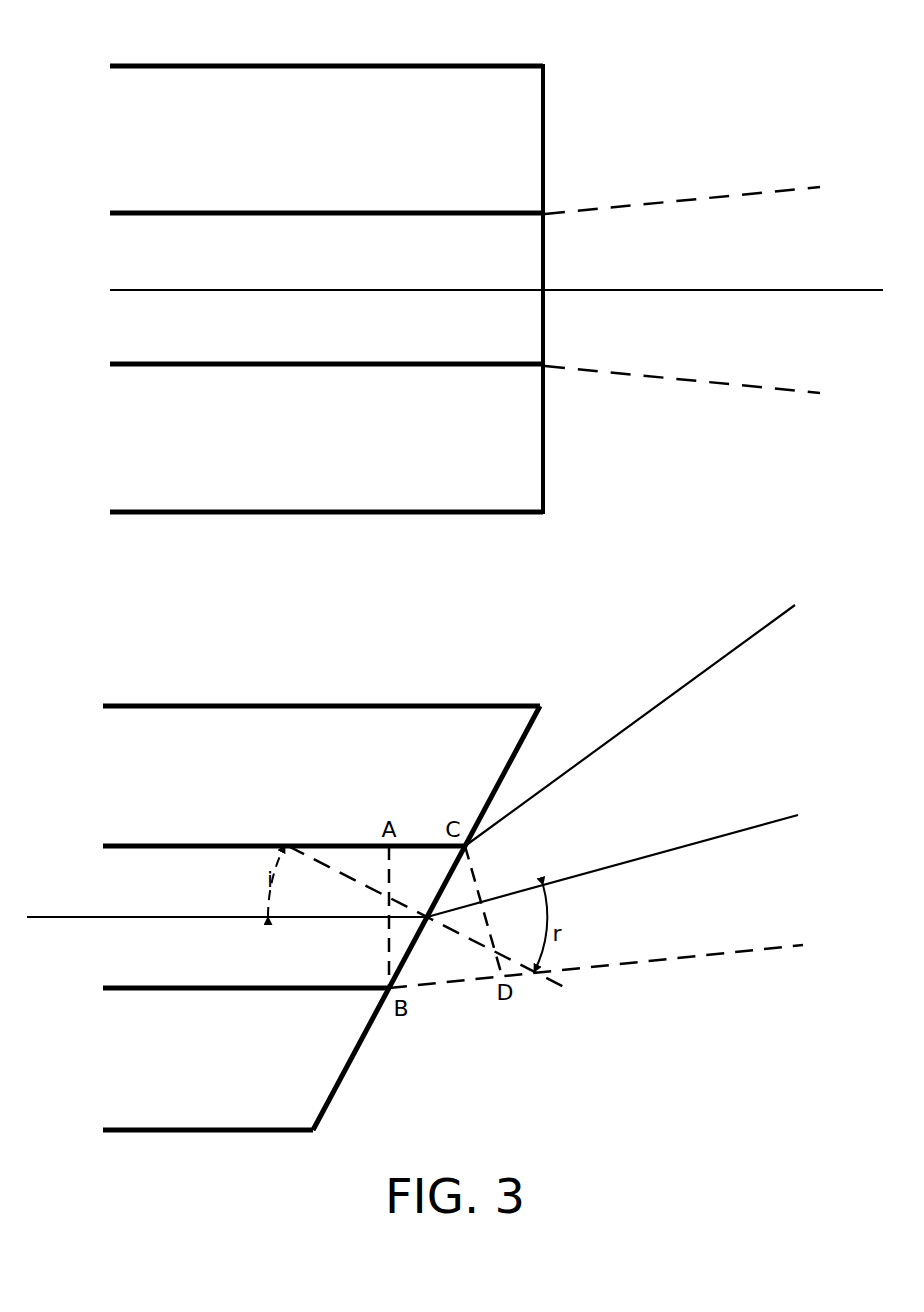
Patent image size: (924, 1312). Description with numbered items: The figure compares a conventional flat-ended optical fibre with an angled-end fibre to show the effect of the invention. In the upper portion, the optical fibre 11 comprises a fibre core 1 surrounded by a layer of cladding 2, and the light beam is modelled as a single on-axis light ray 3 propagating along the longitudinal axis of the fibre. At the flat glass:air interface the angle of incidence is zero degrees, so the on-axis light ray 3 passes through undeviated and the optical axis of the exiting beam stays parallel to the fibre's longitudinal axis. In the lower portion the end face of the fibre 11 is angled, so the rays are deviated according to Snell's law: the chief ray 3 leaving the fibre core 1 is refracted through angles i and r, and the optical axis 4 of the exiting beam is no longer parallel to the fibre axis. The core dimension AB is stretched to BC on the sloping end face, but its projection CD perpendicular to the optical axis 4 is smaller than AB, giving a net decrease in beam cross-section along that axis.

The optical fibre 11 is at (243, 63).
The cladding 2 is at (546, 125).
The fibre core 1 is at (546, 244).
The light ray 3 is at (177, 291).
The optical axis of the exiting light beam 4 is at (738, 289).